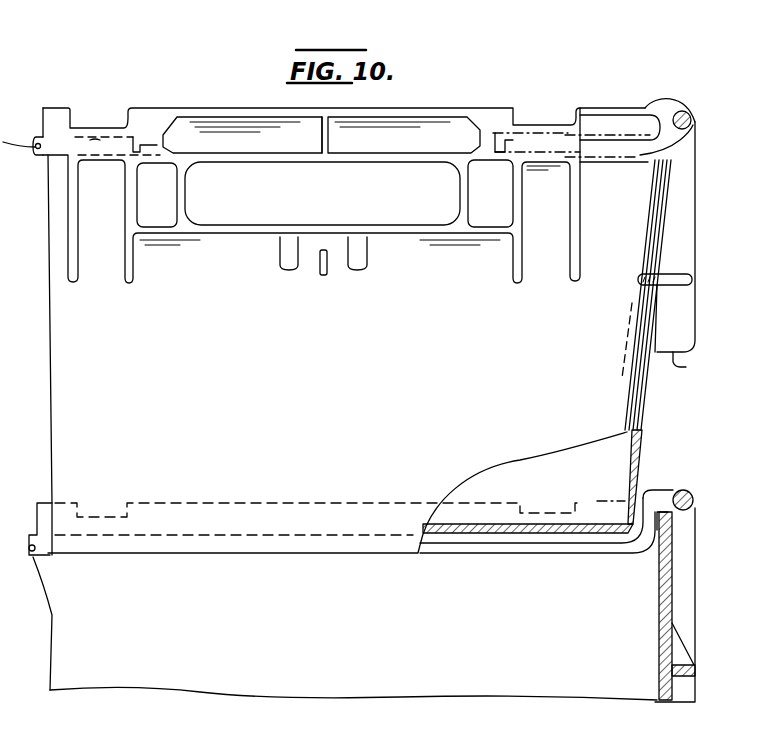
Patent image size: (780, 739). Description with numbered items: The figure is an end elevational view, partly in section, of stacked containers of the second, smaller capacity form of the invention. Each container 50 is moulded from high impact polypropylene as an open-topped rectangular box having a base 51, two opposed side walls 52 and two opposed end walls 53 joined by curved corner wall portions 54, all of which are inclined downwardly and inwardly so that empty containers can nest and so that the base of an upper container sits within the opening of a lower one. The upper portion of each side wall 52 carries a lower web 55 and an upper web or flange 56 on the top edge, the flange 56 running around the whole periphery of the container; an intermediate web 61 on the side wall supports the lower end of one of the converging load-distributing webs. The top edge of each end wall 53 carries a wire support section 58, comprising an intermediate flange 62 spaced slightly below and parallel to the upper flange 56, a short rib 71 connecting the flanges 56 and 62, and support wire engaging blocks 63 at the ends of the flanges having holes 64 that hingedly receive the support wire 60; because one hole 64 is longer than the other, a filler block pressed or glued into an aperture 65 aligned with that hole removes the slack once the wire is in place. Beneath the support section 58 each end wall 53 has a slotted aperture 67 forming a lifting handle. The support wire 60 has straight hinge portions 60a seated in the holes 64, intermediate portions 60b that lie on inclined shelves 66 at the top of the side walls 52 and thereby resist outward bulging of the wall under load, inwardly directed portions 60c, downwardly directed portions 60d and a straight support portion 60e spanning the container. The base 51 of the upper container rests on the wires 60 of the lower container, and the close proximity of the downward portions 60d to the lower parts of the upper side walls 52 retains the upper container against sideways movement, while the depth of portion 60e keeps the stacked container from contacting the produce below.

The container 50 is at (664, 397).
The base 51 is at (470, 530).
The side wall 52 is at (643, 445).
The end wall 53 is at (237, 344).
The curved corner wall portion 54 is at (660, 323).
The lower web 55 is at (686, 367).
The upper web or flange 56 is at (200, 115).
The wire support section 58 is at (451, 105).
The support wire 60 is at (545, 543).
The attachment or hinge portion 60a is at (593, 140).
The intermediate portion 60b is at (682, 132).
The inwardly directed portion 60c is at (663, 107).
The downwardly directed portion 60d is at (633, 516).
The straight support portion 60e is at (595, 157).
The intermediate web 61 is at (673, 277).
The intermediate flange or web 62 is at (392, 157).
The support wire engaging block 63 is at (112, 138).
The hole 64 is at (97, 147).
The aperture 65 is at (148, 150).
The inclined shelf 66 is at (695, 162).
The slotted aperture 67 is at (393, 213).
The short rib or web 71 is at (322, 133).